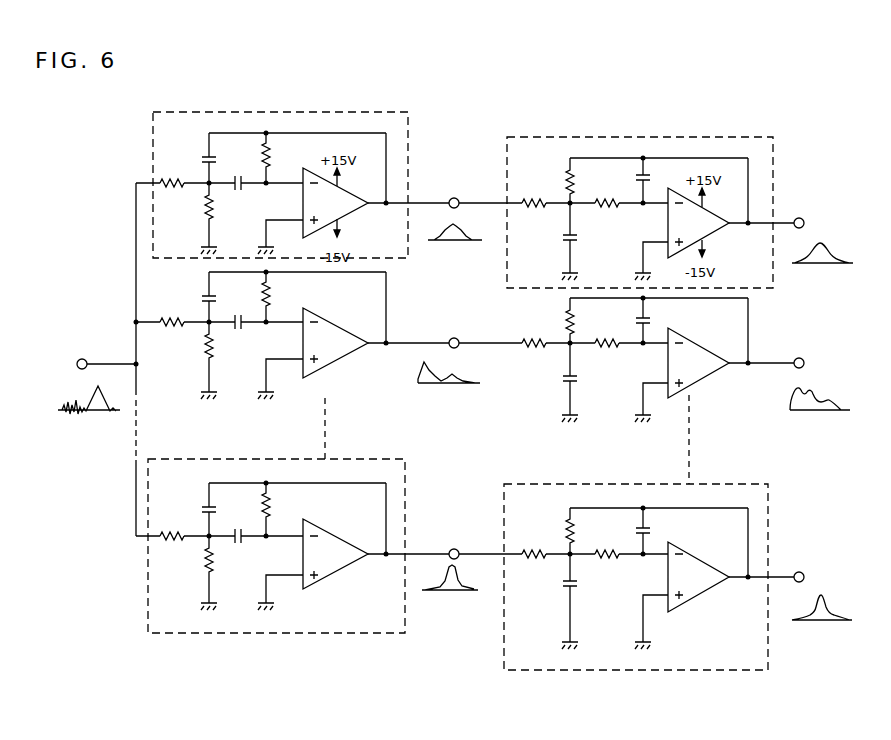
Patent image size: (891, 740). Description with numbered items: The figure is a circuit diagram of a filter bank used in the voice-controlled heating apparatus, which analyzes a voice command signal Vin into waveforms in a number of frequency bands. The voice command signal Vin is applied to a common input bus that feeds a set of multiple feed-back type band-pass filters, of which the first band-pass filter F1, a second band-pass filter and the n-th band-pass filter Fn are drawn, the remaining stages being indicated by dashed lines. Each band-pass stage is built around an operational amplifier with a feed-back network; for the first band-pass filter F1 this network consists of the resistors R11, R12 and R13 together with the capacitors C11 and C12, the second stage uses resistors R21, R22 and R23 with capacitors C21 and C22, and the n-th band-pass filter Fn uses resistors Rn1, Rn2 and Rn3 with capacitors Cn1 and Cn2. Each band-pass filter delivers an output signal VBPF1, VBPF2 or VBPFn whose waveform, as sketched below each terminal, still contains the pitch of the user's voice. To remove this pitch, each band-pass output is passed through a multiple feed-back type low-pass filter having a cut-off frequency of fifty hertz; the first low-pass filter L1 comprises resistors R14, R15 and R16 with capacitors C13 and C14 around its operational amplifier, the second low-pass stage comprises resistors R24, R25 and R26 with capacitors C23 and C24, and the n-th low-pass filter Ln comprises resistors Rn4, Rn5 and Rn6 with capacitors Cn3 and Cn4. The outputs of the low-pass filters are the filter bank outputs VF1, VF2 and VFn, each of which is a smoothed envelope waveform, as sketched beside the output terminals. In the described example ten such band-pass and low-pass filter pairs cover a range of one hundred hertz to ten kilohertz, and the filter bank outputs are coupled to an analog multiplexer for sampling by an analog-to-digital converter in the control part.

The voice command signal Vin is at (98, 359).
The band-pass filter F1 is at (342, 111).
The low-pass filter L1 is at (640, 137).
The band-pass filter Fn is at (363, 459).
The low-pass filter Ln is at (697, 485).
The resistor R11 is at (177, 189).
The resistor R12 is at (215, 222).
The resistor R13 is at (270, 164).
The capacitor C11 is at (202, 158).
The capacitor C12 is at (238, 190).
The resistor R14 is at (537, 209).
The resistor R15 is at (566, 185).
The resistor R16 is at (609, 213).
The capacitor C13 is at (578, 240).
The capacitor C14 is at (648, 180).
The resistor R21 is at (172, 325).
The resistor R22 is at (209, 358).
The resistor R23 is at (268, 298).
The capacitor C21 is at (202, 293).
The capacitor C22 is at (237, 332).
The resistor R24 is at (528, 356).
The resistor R25 is at (562, 318).
The resistor R26 is at (605, 338).
The capacitor C23 is at (575, 375).
The capacitor C24 is at (650, 321).
The resistor Rn1 is at (173, 542).
The resistor Rn2 is at (211, 572).
The resistor Rn3 is at (272, 510).
The capacitor Cn1 is at (200, 507).
The capacitor Cn2 is at (237, 547).
The resistor Rn4 is at (538, 567).
The resistor Rn5 is at (563, 532).
The resistor Rn6 is at (603, 549).
The capacitor Cn3 is at (580, 582).
The capacitor Cn4 is at (648, 532).
The output signal of band-pass filter VBPF1 is at (445, 200).
The output signal of band-pass filter VBPF2 is at (445, 343).
The output signal of band-pass filter VBPFn is at (445, 551).
The filter bank output VF1 is at (791, 225).
The filter bank output VF2 is at (789, 370).
The filter bank output VFn is at (790, 580).